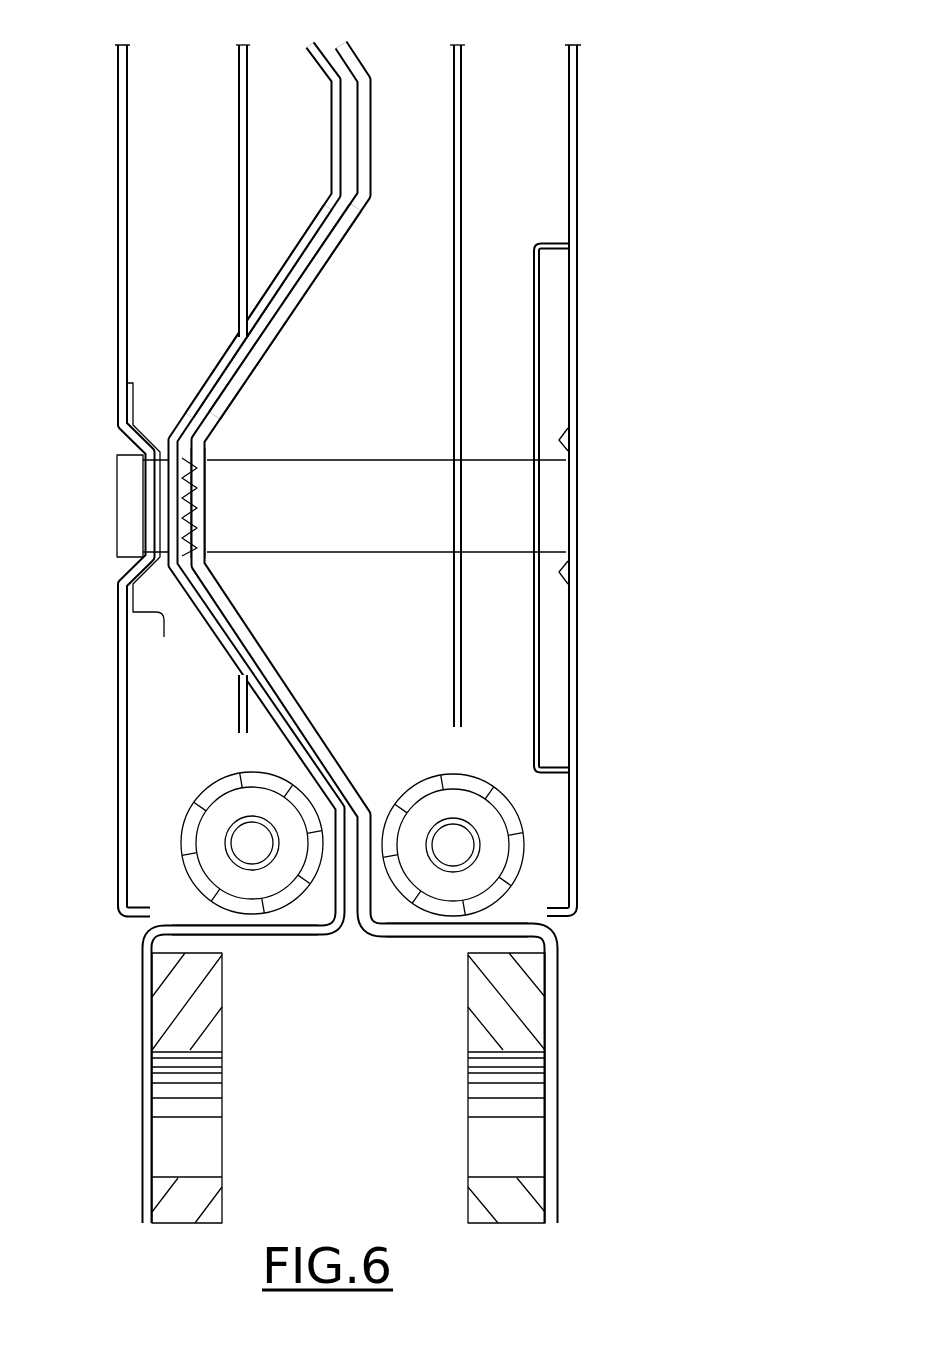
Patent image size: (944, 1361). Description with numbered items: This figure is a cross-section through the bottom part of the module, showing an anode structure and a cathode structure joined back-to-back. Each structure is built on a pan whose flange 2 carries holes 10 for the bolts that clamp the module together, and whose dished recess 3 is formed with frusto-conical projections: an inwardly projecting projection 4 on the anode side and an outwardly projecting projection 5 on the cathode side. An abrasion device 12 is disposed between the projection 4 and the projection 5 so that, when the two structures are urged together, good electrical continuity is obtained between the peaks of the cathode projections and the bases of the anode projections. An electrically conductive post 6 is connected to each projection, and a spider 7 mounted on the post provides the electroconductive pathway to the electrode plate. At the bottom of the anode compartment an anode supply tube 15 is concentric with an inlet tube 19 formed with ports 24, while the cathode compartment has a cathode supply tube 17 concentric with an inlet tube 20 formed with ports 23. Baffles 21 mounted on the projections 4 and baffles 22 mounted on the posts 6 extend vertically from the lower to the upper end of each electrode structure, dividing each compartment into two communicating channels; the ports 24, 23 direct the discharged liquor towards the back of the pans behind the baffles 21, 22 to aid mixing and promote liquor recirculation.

The flange 2 is at (140, 985).
The dished recess 3 is at (321, 62).
The inwardly projecting frusto-conical projection 4 is at (309, 233).
The outwardly projecting frusto-conical projection 5 is at (328, 262).
The electrically conductive post 6 is at (352, 552).
The spider 7 is at (541, 326).
The hole 10 is at (172, 1135).
The abrasion device 12 is at (191, 487).
The anode supply tube 15 is at (225, 842).
The cathode supply tube 17 is at (480, 838).
The inlet tube 19 is at (190, 877).
The inlet tube 20 is at (515, 884).
The baffle 21 is at (238, 93).
The baffle 22 is at (462, 100).
The port 23 is at (422, 783).
The port 24 is at (285, 792).